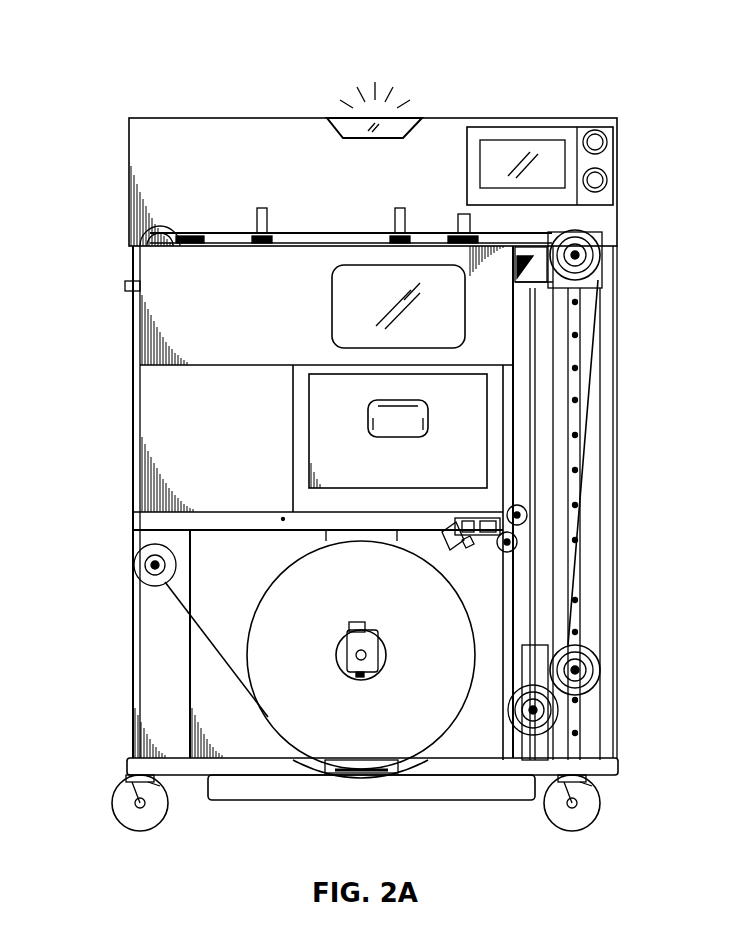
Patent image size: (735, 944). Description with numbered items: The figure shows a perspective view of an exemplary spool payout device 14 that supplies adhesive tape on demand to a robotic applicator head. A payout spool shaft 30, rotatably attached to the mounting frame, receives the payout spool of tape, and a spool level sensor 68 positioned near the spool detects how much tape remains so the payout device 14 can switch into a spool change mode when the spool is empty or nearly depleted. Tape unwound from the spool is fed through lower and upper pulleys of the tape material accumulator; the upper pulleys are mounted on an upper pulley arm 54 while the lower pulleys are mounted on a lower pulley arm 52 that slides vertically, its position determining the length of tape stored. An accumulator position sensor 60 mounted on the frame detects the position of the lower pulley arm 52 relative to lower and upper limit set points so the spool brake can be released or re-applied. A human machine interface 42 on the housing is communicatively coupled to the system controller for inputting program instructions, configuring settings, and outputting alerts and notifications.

The payout device 14 is at (352, 855).
The human machine interface 42 is at (548, 139).
The upper pulley arm 54 is at (578, 258).
The accumulator position sensor 60 is at (530, 282).
The spool level sensor 68 is at (457, 522).
The payout spool shaft 30 is at (372, 658).
The lower pulley arm 52 is at (585, 669).